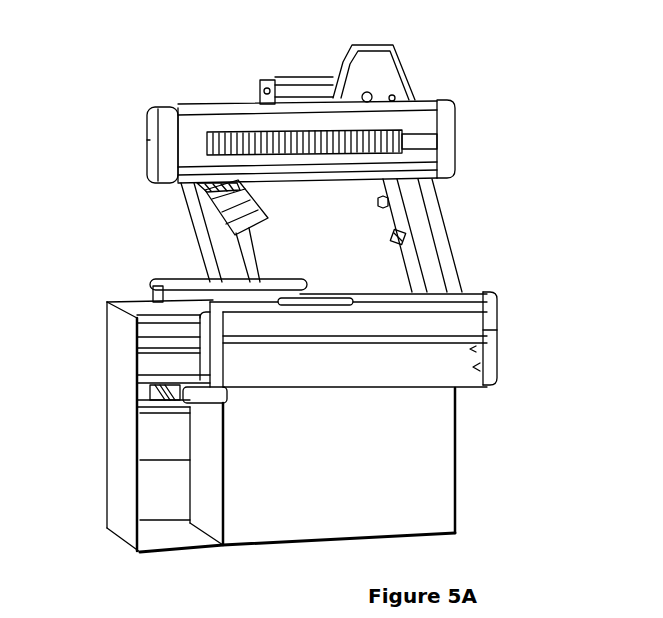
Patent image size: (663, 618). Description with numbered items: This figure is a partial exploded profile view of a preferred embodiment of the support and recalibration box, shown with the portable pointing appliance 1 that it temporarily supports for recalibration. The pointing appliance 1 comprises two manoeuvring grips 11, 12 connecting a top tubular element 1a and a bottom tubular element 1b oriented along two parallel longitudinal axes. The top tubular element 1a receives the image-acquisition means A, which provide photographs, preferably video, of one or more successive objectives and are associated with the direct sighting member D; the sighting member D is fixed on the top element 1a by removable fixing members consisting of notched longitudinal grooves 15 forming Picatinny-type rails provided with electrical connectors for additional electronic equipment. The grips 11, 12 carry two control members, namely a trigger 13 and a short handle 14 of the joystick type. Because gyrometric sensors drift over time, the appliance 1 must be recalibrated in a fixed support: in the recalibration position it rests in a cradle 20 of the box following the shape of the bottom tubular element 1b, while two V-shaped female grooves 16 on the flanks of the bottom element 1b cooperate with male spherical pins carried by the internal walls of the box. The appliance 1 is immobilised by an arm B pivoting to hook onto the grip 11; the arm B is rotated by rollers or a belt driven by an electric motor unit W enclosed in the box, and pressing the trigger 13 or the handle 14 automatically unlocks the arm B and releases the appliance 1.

The portable pointing appliance 1 is at (452, 84).
The top tubular element 1a is at (448, 123).
The bottom tubular element 1b is at (490, 298).
The manoeuvring grip 11 is at (202, 240).
The manoeuvring grip 12 is at (440, 220).
The trigger 13 is at (377, 202).
The short handle 14 is at (247, 208).
The notched longitudinal grooves 15 is at (210, 140).
The V-shaped female grooves 16 is at (497, 333).
The cradle 20 is at (427, 388).
The image-acquisition means A is at (150, 152).
The arm B is at (187, 292).
The direct sighting member D is at (385, 52).
The electric motor unit W is at (167, 452).